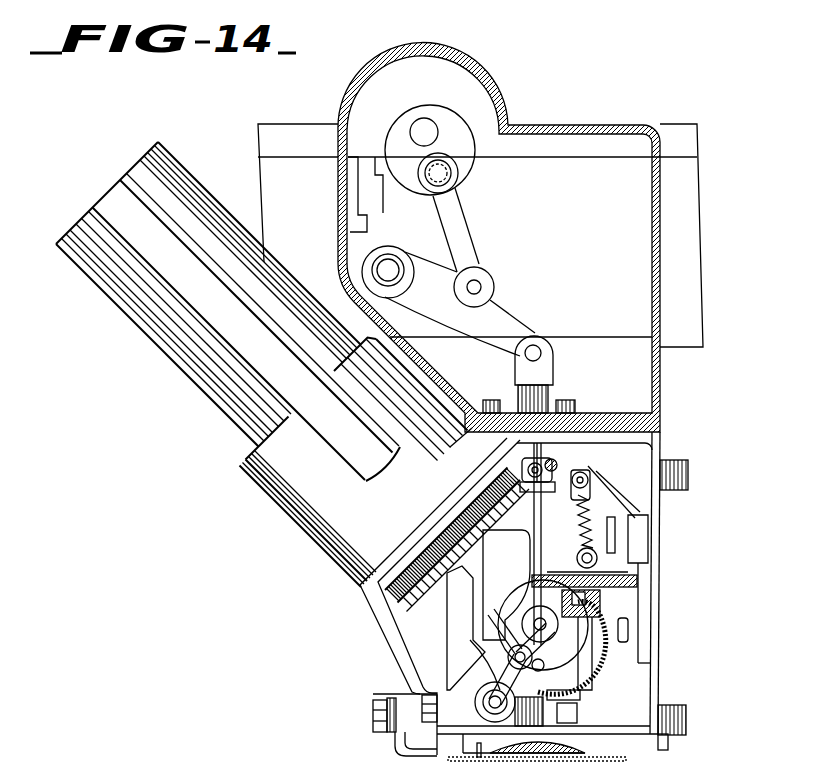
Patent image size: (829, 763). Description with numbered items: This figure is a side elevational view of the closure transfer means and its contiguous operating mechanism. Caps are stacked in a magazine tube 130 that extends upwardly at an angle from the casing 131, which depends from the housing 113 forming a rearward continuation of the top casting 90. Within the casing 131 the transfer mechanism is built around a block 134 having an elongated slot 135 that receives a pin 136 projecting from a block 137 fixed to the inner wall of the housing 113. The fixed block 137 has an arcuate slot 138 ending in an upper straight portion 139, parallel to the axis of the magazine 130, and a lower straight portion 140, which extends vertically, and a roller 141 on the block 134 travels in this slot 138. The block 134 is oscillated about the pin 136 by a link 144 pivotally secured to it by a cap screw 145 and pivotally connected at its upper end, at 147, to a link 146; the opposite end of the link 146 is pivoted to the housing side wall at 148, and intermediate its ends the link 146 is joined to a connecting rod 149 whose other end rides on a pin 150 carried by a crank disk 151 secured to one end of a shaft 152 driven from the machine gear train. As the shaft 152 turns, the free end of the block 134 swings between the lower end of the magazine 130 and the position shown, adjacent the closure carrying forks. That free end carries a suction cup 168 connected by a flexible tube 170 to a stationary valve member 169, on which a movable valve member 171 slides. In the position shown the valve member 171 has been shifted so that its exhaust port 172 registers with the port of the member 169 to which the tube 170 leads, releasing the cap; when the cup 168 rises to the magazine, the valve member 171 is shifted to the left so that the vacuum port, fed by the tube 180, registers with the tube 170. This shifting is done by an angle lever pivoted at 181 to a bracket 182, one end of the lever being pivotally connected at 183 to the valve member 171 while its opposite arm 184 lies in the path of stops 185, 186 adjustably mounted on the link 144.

The top casting 90 is at (690, 185).
The housing 113 is at (662, 292).
The magazine tube 130 is at (195, 367).
The casing 131 is at (365, 620).
The block 134 is at (580, 696).
The elongated slot 135 is at (552, 663).
The pin 136 is at (548, 641).
The block 137 is at (512, 541).
The arcuate slot 138 is at (483, 644).
The upper straight portion 139 is at (486, 554).
The lower straight portion 140 is at (518, 675).
The roller 141 is at (578, 712).
The link 144 is at (541, 540).
The cap screw 145 is at (476, 705).
The link 146 is at (507, 320).
The pivotal connection 147 is at (540, 348).
The pivot 148 is at (390, 260).
The connecting rod 149 is at (464, 237).
The pin 150 is at (440, 160).
The crank disk 151 is at (448, 116).
The shaft 152 is at (428, 122).
The suction cup 168 is at (576, 750).
The stationary valve member 169 is at (598, 604).
The flexible tube 170 is at (600, 680).
The movable valve member 171 is at (640, 578).
The exhaust port 172 is at (575, 568).
The tube 180 is at (613, 516).
The pivot 181 is at (590, 477).
The bracket 182 is at (610, 487).
The pivotal connection 183 is at (598, 556).
The arm 184 is at (553, 486).
The stop 185 is at (527, 471).
The stop 186 is at (500, 622).